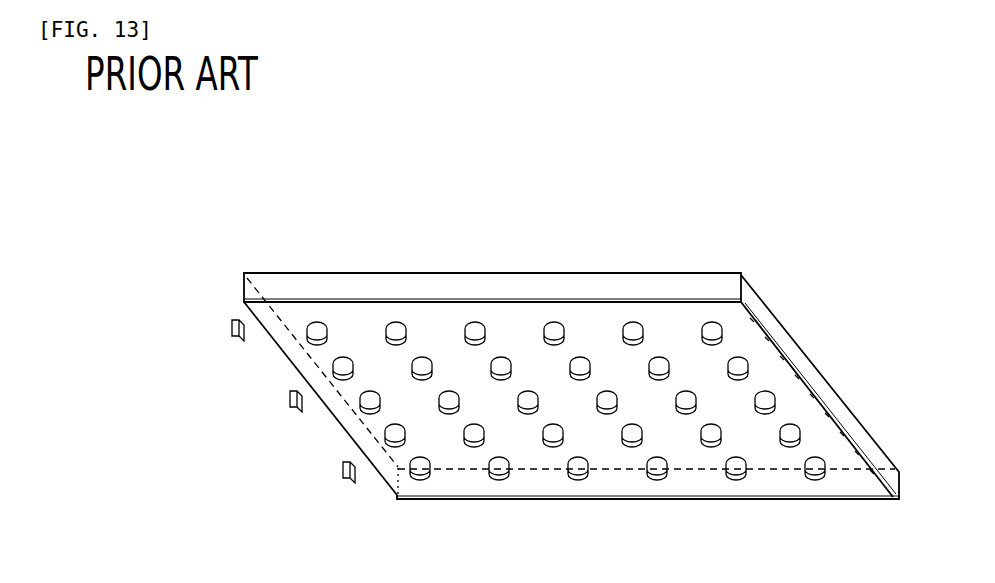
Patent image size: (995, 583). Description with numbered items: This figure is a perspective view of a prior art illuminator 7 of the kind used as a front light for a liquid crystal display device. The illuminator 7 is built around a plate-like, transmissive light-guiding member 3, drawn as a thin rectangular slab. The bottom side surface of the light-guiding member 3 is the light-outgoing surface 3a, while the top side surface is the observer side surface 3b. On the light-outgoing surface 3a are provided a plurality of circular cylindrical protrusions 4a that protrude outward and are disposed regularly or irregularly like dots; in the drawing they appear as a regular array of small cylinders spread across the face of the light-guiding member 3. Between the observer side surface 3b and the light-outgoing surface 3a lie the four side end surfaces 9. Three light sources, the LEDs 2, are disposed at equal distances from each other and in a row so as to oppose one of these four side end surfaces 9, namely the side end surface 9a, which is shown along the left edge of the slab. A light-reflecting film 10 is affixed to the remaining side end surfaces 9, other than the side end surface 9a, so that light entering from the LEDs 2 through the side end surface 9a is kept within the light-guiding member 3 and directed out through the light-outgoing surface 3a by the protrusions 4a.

The illuminator 7 is at (544, 375).
The light-guiding member 3 is at (558, 272).
The light-outgoing surface 3a is at (603, 442).
The observer side surface 3b is at (657, 325).
The protrusions 4a is at (767, 392).
The LEDs 2 is at (230, 327).
The side end surfaces 9 is at (452, 290).
The side end surface 9a is at (280, 348).
The light-reflecting film 10 is at (375, 290).